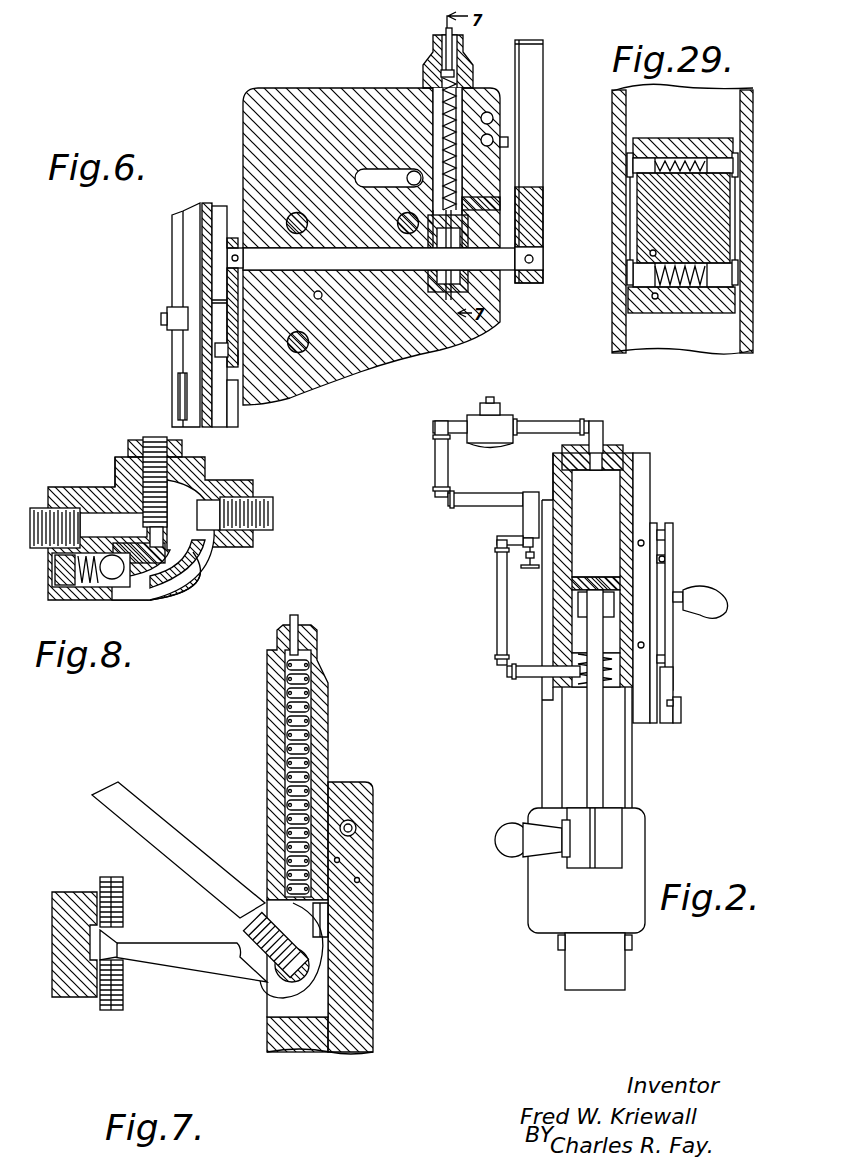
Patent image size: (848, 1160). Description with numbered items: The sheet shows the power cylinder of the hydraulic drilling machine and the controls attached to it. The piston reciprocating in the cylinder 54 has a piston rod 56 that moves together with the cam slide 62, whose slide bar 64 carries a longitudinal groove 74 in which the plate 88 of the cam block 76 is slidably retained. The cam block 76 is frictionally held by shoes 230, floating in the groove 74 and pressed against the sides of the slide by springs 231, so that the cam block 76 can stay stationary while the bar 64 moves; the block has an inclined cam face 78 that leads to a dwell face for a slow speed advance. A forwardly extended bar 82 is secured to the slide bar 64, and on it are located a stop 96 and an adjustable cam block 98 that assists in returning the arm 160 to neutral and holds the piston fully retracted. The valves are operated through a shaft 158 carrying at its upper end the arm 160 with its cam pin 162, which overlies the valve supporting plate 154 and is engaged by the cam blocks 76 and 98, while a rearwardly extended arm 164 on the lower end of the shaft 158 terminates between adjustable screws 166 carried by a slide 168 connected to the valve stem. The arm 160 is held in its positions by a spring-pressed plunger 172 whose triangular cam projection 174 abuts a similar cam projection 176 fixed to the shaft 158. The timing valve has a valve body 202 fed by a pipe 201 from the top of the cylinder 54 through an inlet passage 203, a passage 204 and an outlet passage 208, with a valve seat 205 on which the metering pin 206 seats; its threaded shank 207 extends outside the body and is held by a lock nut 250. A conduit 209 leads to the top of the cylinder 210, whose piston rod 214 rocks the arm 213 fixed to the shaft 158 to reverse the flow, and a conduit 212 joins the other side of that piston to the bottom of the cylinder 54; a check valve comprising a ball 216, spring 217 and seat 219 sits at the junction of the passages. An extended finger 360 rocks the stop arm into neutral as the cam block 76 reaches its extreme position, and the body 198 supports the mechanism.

In FIG. 2, the cylinder 54 is at (603, 500).
In FIG. 2, the piston rod 56 is at (590, 748).
In FIG. 2, the cam slide 62 is at (667, 577).
In FIG. 6, the slide bar 64 is at (230, 213).
In FIG. 29, the slide bar 64 is at (622, 318).
In FIG. 6, the longitudinal groove 74 is at (197, 246).
In FIG. 29, the longitudinal groove 74 is at (735, 112).
In FIG. 6, the cam block 76 is at (222, 337).
In FIG. 29, the cam block 76 is at (668, 140).
In FIG. 6, the inclined cam face 78 is at (238, 382).
In FIG. 6, the forwardly extended bar 82 is at (208, 272).
In FIG. 2, the forwardly extended bar 82 is at (653, 530).
In FIG. 29, the plate 88 is at (657, 220).
In FIG. 6, the stop 96 is at (178, 313).
In FIG. 2, the cam block 98 is at (677, 707).
In FIG. 7, the valve supporting plate 154 is at (307, 1043).
In FIG. 6, the shaft 158 is at (500, 262).
In FIG. 7, the shaft 158 is at (305, 965).
In FIG. 6, the arm 160 is at (292, 397).
In FIG. 6, the cam pin 162 is at (177, 350).
In FIG. 7, the arm 164 is at (203, 957).
In FIG. 7, the screws 166 is at (118, 877).
In FIG. 7, the slide 168 is at (73, 992).
In FIG. 6, the spring-pressed plunger 172 is at (467, 127).
In FIG. 7, the spring-pressed plunger 172 is at (330, 745).
In FIG. 7, the cam projection 174 is at (318, 905).
In FIG. 6, the cam projection 176 is at (430, 300).
In FIG. 7, the cam projection 176 is at (300, 927).
In FIG. 7, the block 198 is at (372, 989).
In FIG. 8, the pipe 201 is at (33, 510).
In FIG. 2, the pipe 201 is at (560, 427).
In FIG. 8, the valve body 202 is at (117, 487).
In FIG. 2, the valve body 202 is at (508, 414).
In FIG. 8, the inlet passage 203 is at (93, 500).
In FIG. 8, the passage 204 is at (197, 567).
In FIG. 8, the valve seat 205 is at (200, 547).
In FIG. 8, the metering pin 206 is at (205, 483).
In FIG. 8, the threaded shank 207 is at (167, 470).
In FIG. 8, the outlet passage 208 is at (160, 590).
In FIG. 8, the conduit 209 is at (273, 520).
In FIG. 2, the conduit 209 is at (440, 467).
In FIG. 2, the cylinder 210 is at (527, 508).
In FIG. 2, the conduit 212 is at (505, 640).
In FIG. 6, the arm 213 is at (533, 176).
In FIG. 7, the arm 213 is at (137, 805).
In FIG. 2, the arm 213 is at (530, 568).
In FIG. 2, the piston rod 214 is at (527, 547).
In FIG. 8, the ball 216 is at (100, 590).
In FIG. 8, the spring 217 is at (75, 590).
In FIG. 8, the seat 219 is at (118, 587).
In FIG. 29, the shoes 230 is at (722, 168).
In FIG. 29, the springs 231 is at (695, 280).
In FIG. 8, the lock nut 250 is at (183, 446).
In FIG. 6, the extended finger 360 is at (183, 393).
In FIG. 2, the extended finger 360 is at (667, 687).